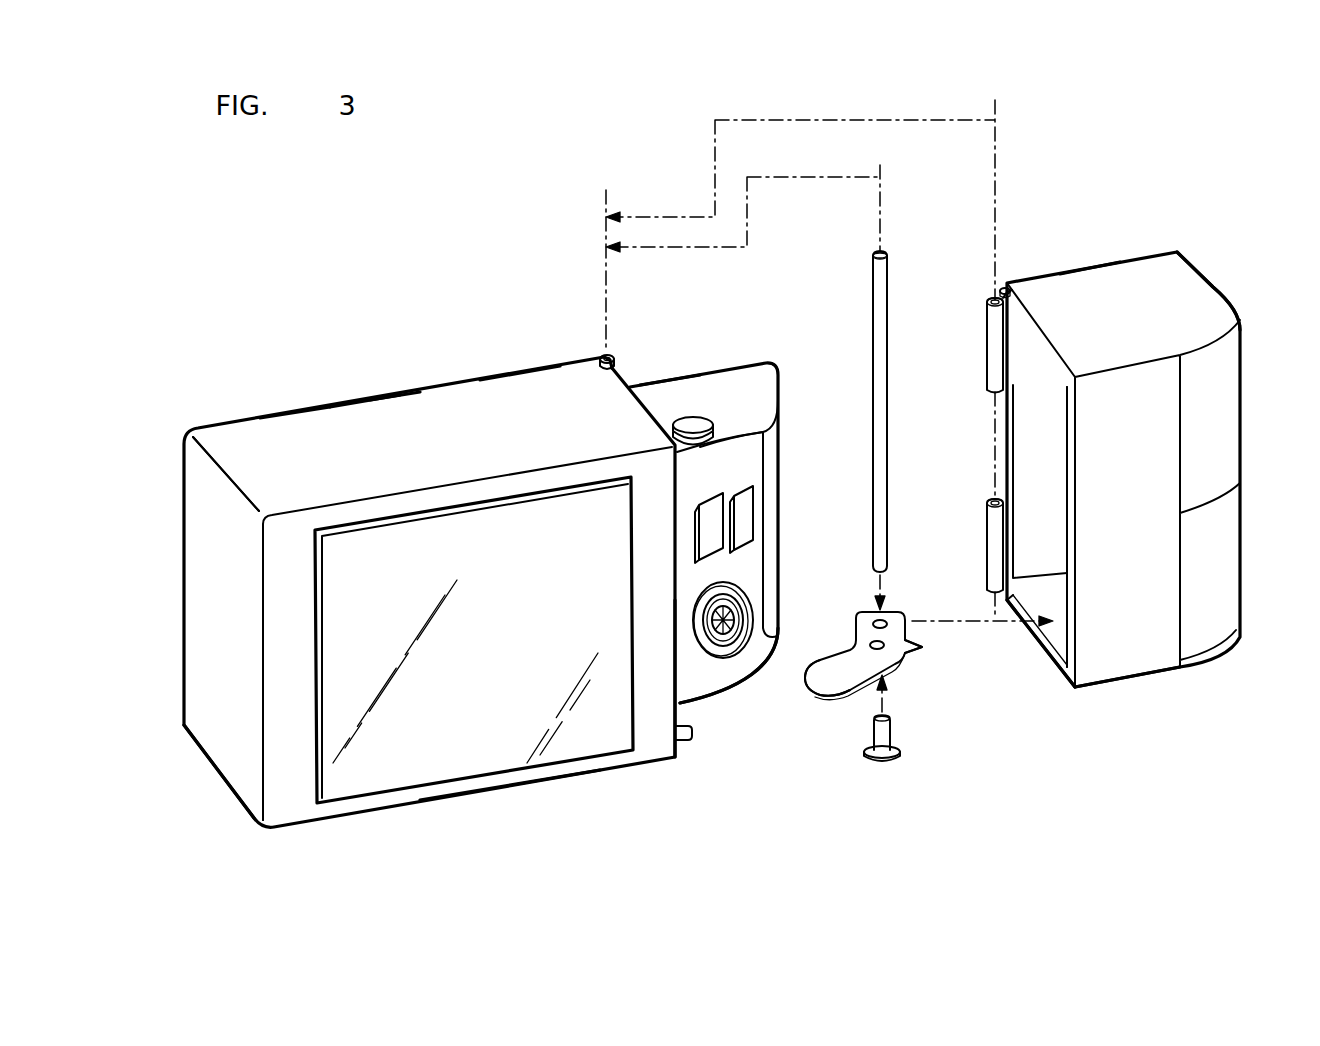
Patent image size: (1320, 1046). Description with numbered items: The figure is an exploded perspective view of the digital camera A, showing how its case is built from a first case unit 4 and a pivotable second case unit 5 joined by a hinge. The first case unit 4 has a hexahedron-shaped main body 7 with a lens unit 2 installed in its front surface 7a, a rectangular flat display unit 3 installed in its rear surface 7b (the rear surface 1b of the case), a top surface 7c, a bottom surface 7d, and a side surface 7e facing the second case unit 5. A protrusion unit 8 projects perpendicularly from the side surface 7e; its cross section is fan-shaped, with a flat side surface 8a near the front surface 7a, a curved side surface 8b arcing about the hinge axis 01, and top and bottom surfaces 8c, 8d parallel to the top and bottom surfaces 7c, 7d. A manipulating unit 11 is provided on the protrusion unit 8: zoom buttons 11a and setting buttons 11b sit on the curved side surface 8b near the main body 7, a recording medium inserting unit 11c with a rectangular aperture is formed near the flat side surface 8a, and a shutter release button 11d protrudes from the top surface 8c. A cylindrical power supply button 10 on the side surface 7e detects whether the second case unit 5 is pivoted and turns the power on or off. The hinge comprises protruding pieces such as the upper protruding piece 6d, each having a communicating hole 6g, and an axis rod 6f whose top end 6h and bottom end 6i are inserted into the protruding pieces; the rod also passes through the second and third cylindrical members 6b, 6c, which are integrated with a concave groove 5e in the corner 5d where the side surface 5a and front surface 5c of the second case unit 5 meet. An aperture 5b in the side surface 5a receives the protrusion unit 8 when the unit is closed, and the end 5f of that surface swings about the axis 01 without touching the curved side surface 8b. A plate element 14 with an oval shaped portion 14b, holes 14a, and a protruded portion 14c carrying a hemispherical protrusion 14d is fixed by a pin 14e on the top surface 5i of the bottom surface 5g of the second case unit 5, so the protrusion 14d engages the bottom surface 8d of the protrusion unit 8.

The rear surface 1b is at (300, 823).
The lens unit 2 is at (372, 392).
The display unit 3 is at (415, 755).
The first case unit 4 is at (512, 360).
The second case unit 5 is at (1198, 292).
The side surface 5a is at (1034, 655).
The aperture 5b is at (1048, 500).
The front surface 5c is at (1138, 262).
The corner 5d is at (998, 288).
The groove 5e is at (1009, 287).
The end of the side surface 5f is at (1066, 585).
The bottom surface 5g is at (1130, 680).
The top surface of the bottom surface 5i is at (1018, 600).
The second cylindrical member 6b is at (990, 352).
The third cylindrical member 6c is at (990, 528).
The protruding piece 6d is at (604, 352).
The axis rod 6f is at (888, 368).
The communicating hole 6g is at (605, 369).
The top end 6h is at (886, 252).
The bottom end 6i is at (888, 572).
The main body 7 is at (436, 400).
The front surface 7a is at (268, 415).
The rear surface 7b is at (285, 825).
The top surface 7c is at (252, 440).
The bottom surface 7d is at (500, 795).
The side surface 7e is at (676, 665).
The protrusion unit 8 is at (787, 298).
The flat side surface 8a is at (765, 360).
The curved side surface 8b is at (743, 450).
The top surface 8c is at (697, 386).
The bottom surface 8d is at (730, 690).
The power supply button 10 is at (690, 745).
The manipulating unit 11 is at (556, 515).
The zoom buttons 11a is at (740, 512).
The setting buttons 11b is at (700, 616).
The recording medium inserting unit 11c is at (735, 540).
The shutter release button 11d is at (668, 435).
The plate element 14 is at (898, 668).
The hole 14a is at (924, 647).
The oval shaped portion 14b is at (852, 635).
The protruded portion 14c is at (840, 700).
The hemispherical protrusion 14d is at (818, 672).
The pin 14e is at (890, 760).
The axis 01 is at (799, 341).
The digital camera A is at (1122, 162).